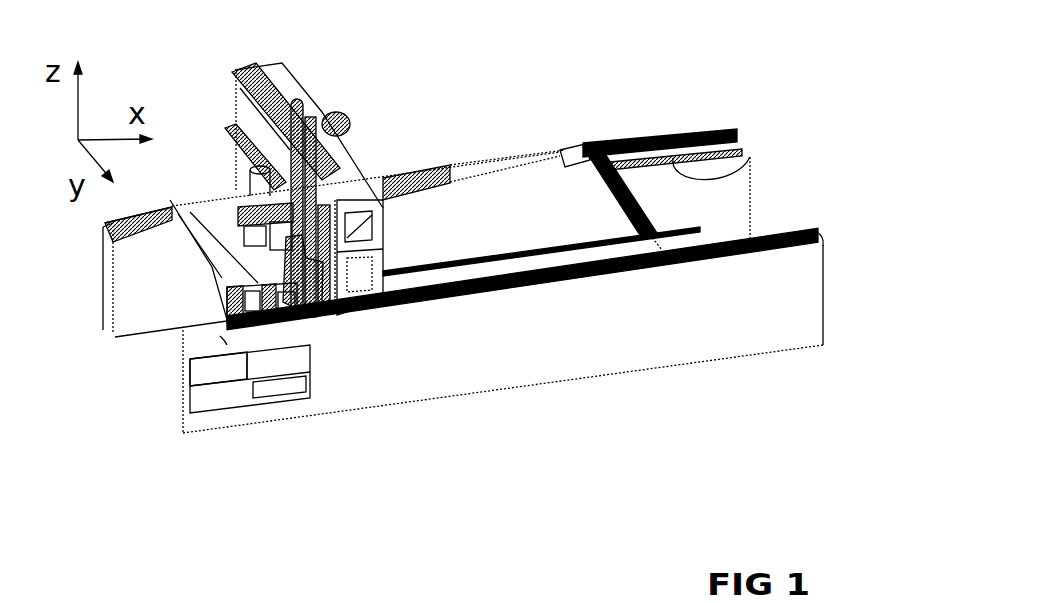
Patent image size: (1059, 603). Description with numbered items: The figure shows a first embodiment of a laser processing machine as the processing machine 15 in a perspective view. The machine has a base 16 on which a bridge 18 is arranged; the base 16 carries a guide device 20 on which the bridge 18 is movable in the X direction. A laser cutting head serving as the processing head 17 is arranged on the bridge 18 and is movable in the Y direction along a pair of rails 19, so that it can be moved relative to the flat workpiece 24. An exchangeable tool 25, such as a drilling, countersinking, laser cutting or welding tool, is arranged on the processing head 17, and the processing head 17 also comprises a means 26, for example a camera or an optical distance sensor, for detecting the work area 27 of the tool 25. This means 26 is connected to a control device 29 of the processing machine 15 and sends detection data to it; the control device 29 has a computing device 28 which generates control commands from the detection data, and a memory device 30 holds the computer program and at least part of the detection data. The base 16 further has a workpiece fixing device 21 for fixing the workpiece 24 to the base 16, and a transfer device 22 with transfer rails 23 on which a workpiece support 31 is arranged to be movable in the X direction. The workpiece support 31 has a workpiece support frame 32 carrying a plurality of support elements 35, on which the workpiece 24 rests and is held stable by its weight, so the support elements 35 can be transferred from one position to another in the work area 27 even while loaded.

The processing machine 15 is at (697, 60).
The base 16 is at (750, 180).
The processing head 17 is at (320, 180).
The bridge 18 is at (363, 180).
The pair of rails 19 is at (235, 133).
The guide device 20 is at (680, 140).
The workpiece fixing device 21 is at (183, 215).
The transfer device 22 is at (470, 136).
The transfer rails 23 is at (752, 160).
The flat workpiece 24 is at (565, 168).
The tool 25 is at (278, 270).
The means for detecting the work area 26 is at (233, 227).
The work area 27 is at (293, 313).
The computing device 28 is at (293, 392).
The control device 29 is at (232, 400).
The memory device 30 is at (227, 347).
The workpiece support 31 is at (655, 250).
The workpiece support frame 32 is at (492, 272).
The support elements 35 is at (612, 143).